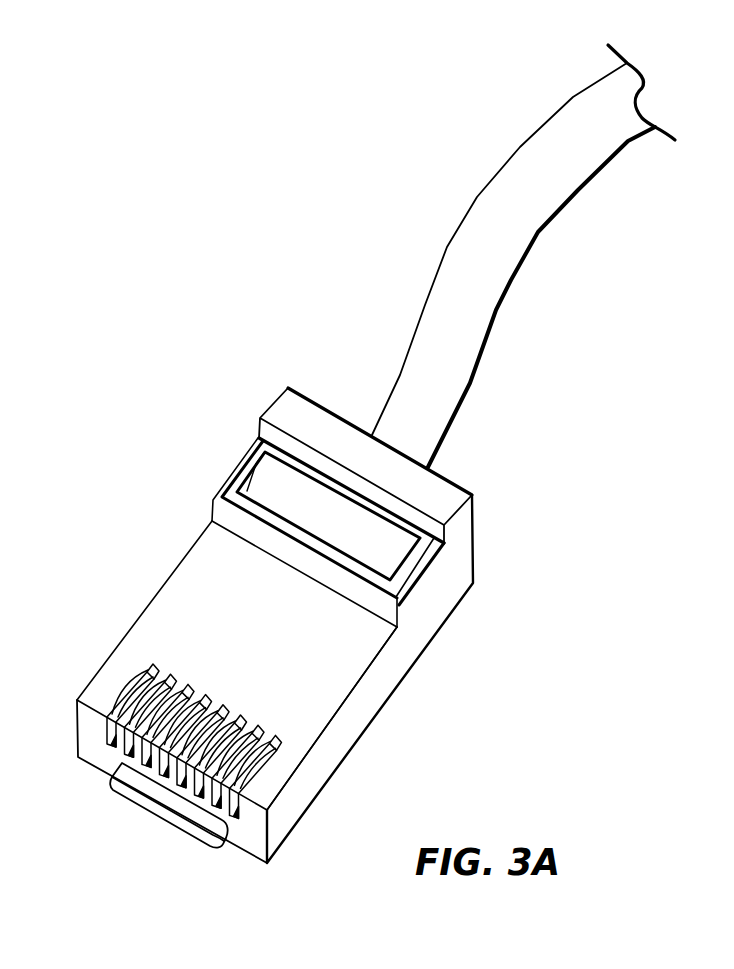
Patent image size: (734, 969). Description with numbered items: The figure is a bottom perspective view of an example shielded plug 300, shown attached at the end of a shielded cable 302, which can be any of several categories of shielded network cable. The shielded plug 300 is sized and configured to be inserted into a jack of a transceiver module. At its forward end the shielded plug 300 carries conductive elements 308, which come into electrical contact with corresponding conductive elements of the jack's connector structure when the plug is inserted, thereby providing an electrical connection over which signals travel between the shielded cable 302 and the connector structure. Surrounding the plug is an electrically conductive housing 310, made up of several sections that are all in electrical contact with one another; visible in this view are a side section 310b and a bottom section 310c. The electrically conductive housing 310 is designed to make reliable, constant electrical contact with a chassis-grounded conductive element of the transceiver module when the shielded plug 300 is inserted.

The shielded plug 300 is at (624, 387).
The shielded cable 302 is at (532, 143).
The conductive elements 308 is at (253, 830).
The electrically conductive housing 310 is at (456, 657).
The side section 310b is at (375, 697).
The bottom section 310c is at (317, 417).